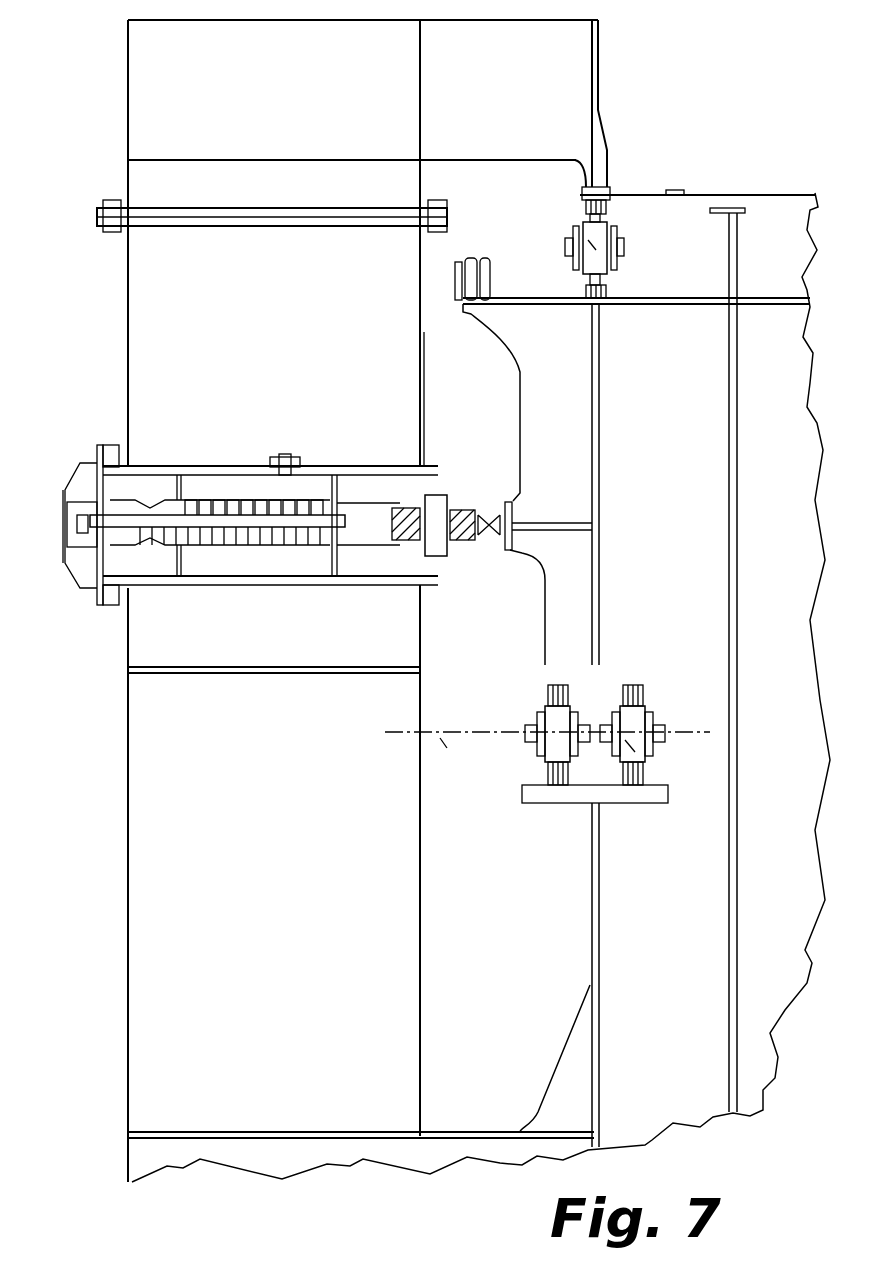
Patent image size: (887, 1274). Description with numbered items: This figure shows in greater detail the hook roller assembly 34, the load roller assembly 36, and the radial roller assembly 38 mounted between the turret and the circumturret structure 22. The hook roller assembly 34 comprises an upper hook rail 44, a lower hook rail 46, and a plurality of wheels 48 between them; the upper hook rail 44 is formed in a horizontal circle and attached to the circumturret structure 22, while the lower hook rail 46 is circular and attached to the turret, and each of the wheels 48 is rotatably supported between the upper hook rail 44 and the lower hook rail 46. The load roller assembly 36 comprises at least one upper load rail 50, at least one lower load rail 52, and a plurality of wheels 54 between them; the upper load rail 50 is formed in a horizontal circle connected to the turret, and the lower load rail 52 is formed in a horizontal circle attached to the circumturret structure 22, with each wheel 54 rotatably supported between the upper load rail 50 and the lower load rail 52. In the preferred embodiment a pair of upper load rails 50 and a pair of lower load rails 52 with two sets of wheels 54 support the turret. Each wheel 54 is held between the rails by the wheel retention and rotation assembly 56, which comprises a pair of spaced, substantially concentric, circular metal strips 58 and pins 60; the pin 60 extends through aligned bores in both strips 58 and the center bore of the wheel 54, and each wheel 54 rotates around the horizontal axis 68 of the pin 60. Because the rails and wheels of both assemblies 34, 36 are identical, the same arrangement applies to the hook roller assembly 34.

The circumturret structure 22 is at (608, 149).
The hook roller assembly 34 is at (628, 237).
The load roller assembly 36 is at (527, 748).
The radial roller assembly 38 is at (256, 588).
The upper hook rail 44 is at (606, 213).
The lower hook rail 46 is at (606, 293).
The wheels 48 is at (592, 248).
The upper load rail 50 is at (640, 688).
The lower load rail 52 is at (640, 796).
The wheels 54 is at (628, 752).
The wheel retention and rotation assembly 56 is at (668, 726).
The metal strips 58 is at (537, 713).
The pin 60 is at (668, 736).
The horizontal axis 68 is at (449, 757).